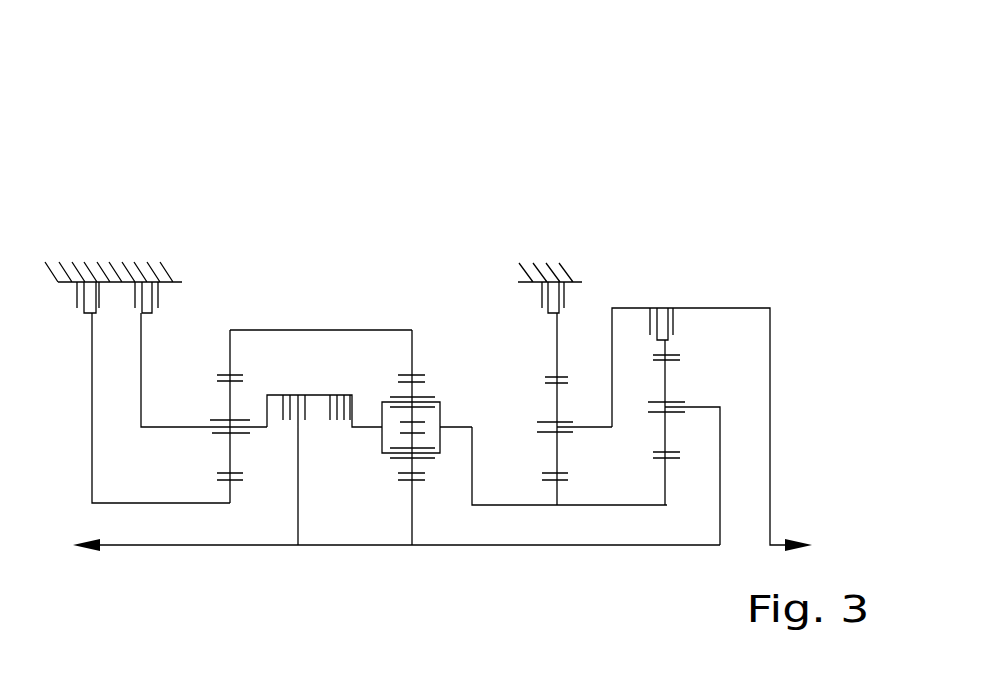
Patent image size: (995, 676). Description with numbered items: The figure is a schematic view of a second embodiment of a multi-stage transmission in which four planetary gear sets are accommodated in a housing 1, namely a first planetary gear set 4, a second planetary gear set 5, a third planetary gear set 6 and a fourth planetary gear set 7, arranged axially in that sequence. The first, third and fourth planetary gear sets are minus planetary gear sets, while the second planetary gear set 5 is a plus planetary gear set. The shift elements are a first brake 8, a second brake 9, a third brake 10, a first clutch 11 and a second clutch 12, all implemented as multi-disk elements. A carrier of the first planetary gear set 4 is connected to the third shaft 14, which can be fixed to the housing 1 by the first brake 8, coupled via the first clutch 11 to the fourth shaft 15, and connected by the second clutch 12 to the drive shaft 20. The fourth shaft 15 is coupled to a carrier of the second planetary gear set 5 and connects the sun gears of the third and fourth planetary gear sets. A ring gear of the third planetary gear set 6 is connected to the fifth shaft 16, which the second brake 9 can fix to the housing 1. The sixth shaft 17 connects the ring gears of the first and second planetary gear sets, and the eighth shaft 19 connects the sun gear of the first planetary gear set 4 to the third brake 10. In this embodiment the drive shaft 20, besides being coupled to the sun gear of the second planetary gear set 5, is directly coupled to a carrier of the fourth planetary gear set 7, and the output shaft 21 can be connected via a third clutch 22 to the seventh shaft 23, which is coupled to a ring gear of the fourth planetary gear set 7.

The housing 1 is at (150, 270).
The first planetary gear set 4 is at (228, 243).
The second planetary gear set 5 is at (408, 243).
The third planetary gear set 6 is at (554, 243).
The fourth planetary gear set 7 is at (666, 243).
The first brake 8 is at (137, 282).
The second brake 9 is at (570, 277).
The third brake 10 is at (93, 282).
The first clutch 11 is at (338, 415).
The second clutch 12 is at (290, 428).
The third shaft 14 is at (141, 390).
The fourth shaft 15 is at (567, 505).
The fifth shaft 16 is at (557, 347).
The sixth shaft 17 is at (340, 328).
The eighth shaft 19 is at (92, 433).
The drive shaft 20 is at (194, 546).
The output shaft 21 is at (770, 388).
The third clutch 22 is at (664, 328).
The seventh shaft 23 is at (665, 350).